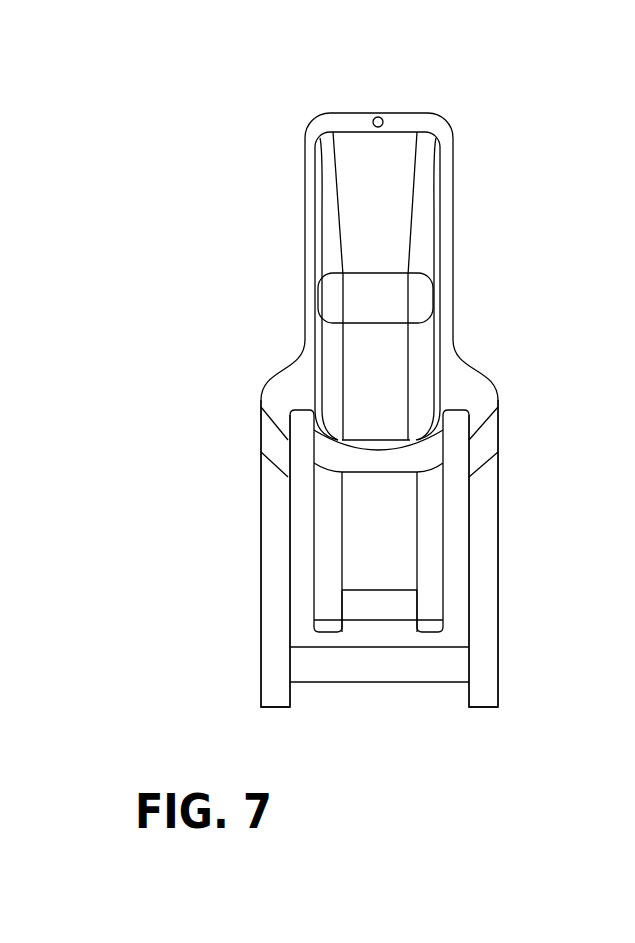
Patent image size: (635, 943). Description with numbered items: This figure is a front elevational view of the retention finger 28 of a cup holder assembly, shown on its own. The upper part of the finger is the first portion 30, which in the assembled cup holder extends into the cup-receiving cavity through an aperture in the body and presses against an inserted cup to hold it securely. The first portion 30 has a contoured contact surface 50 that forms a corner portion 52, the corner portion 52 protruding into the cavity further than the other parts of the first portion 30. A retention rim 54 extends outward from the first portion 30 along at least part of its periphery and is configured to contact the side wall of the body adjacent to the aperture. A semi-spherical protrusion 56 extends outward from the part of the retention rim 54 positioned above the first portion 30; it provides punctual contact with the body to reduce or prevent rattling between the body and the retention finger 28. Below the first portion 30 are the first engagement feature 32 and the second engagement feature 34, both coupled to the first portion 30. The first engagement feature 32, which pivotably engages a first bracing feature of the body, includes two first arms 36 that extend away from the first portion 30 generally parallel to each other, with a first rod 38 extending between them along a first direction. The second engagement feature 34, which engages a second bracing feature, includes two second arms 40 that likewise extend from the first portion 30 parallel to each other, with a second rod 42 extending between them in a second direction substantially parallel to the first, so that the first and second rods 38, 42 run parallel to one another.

The retention finger 28 is at (433, 95).
The first portion 30 is at (347, 183).
The first engagement feature 32 is at (288, 663).
The second engagement feature 34 is at (415, 605).
The first arm 36 is at (275, 625).
The first rod 38 is at (427, 665).
The second arm 40 is at (325, 538).
The second rod 42 is at (365, 603).
The contoured contact surface 50 is at (385, 245).
The corner portion 52 is at (362, 293).
The retention rim 54 is at (447, 193).
The protrusion 56 is at (379, 117).